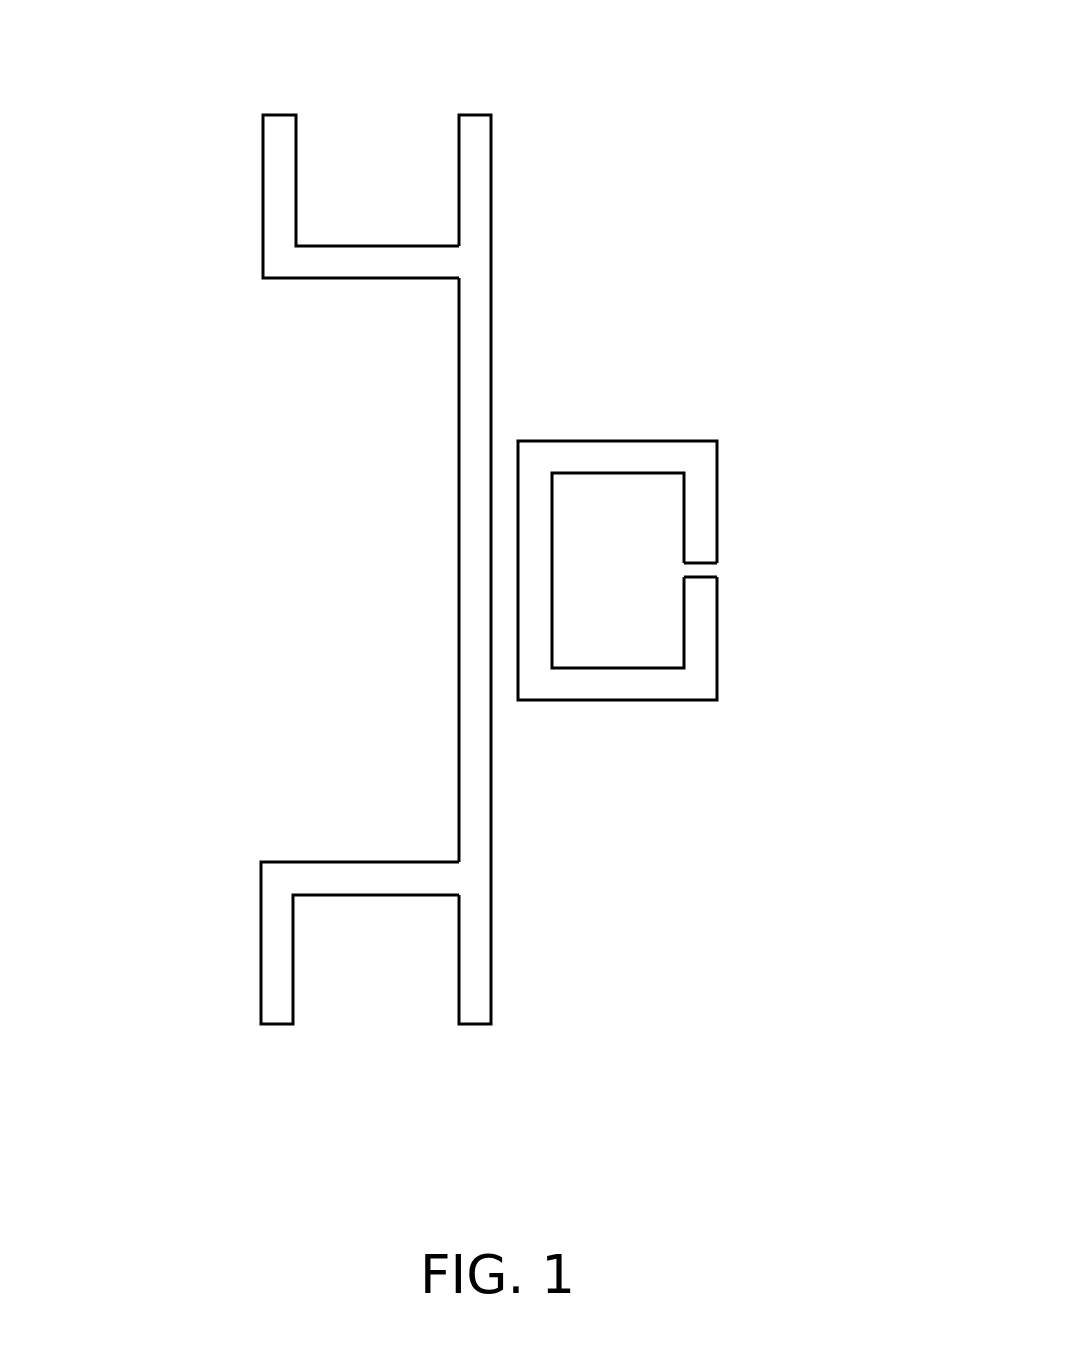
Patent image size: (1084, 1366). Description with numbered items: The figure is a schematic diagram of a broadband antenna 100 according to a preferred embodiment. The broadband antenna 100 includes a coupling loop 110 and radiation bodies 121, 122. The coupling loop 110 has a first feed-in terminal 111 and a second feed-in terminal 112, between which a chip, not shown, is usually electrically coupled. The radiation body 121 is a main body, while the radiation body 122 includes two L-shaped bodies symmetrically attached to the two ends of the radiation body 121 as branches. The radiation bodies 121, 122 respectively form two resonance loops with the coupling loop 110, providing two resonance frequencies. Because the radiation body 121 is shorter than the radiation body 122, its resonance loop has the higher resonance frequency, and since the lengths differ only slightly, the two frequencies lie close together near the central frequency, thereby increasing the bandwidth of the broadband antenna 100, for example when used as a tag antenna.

The broadband antenna 100 is at (898, 31).
The coupling loop 110 is at (615, 440).
The first feed-in terminal 111 is at (697, 563).
The second feed-in terminal 112 is at (695, 577).
The radiation body 121 is at (492, 183).
The radiation body 122 is at (263, 193).